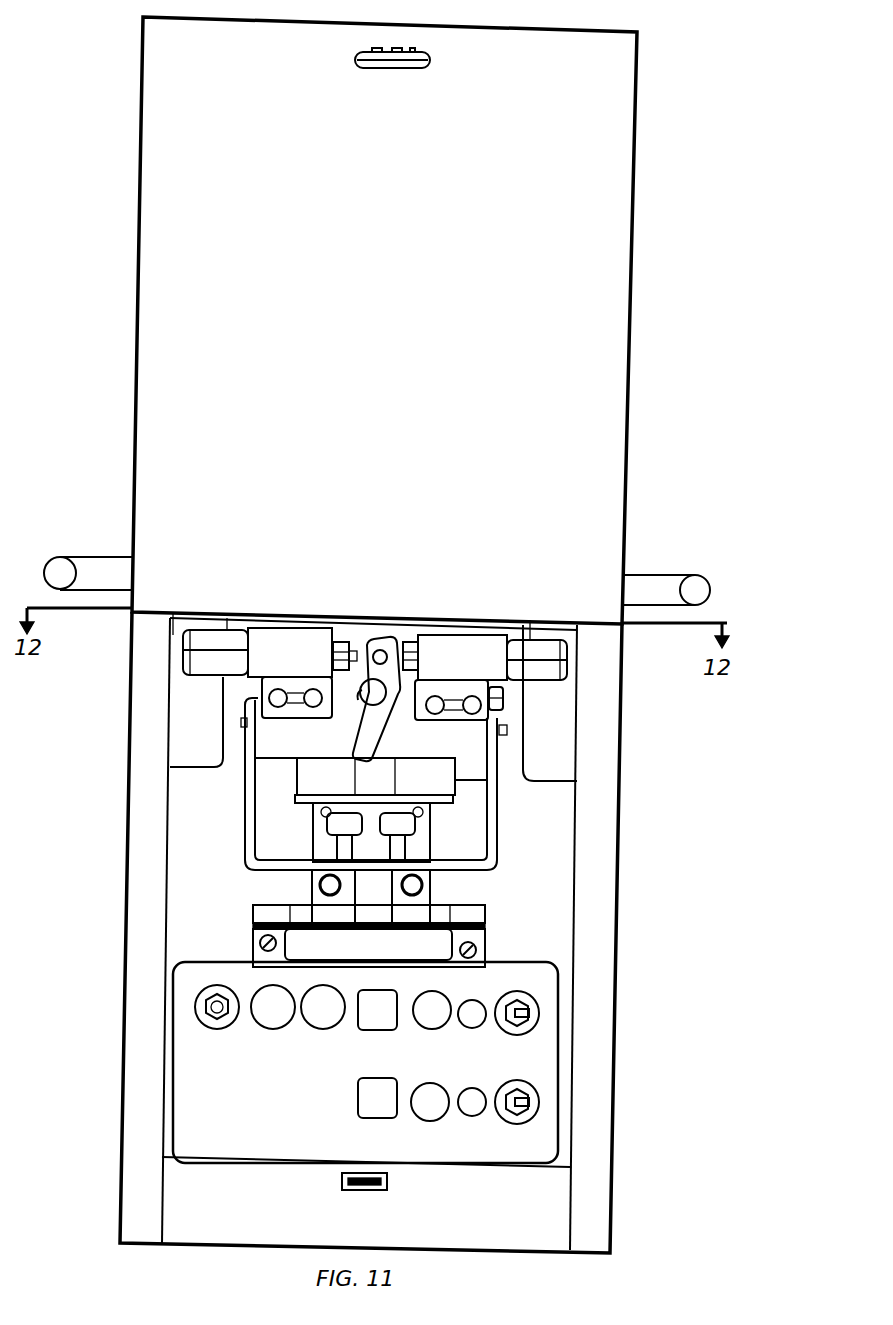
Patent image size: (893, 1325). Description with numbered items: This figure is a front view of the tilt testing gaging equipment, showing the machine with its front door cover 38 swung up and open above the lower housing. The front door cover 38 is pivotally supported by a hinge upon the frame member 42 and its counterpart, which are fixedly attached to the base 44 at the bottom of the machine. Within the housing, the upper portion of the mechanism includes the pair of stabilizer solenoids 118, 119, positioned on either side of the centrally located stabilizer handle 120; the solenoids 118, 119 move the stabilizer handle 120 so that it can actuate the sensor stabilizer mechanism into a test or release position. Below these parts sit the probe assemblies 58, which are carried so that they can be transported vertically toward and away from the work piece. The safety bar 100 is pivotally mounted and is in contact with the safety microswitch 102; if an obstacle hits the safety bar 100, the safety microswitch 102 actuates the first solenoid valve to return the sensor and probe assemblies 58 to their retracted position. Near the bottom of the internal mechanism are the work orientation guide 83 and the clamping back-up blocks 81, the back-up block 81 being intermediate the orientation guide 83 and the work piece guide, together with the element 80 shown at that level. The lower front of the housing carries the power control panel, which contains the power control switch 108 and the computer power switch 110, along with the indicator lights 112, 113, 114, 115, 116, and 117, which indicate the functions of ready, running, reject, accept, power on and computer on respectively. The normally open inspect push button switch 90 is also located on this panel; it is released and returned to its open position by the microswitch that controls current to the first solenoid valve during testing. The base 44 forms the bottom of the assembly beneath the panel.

The front door cover 38 is at (595, 318).
The frame member 42 is at (143, 672).
The base 44 is at (540, 1210).
The probe assemblies 58 is at (415, 830).
The base plate 80 is at (270, 952).
The clamping back-up blocks 81 is at (268, 915).
The work orientation guide 83 is at (362, 900).
The inspect push button switch 90 is at (210, 1005).
The safety bar 100 is at (503, 765).
The safety microswitch 102 is at (498, 693).
The power control switch 108 is at (520, 1012).
The computer power switch 110 is at (520, 1102).
The indicator light 112 is at (256, 1020).
The indicator light 113 is at (310, 1020).
The indicator light 114 is at (360, 1020).
The indicator light 115 is at (393, 1082).
The indicator light 116 is at (435, 1010).
The indicator light 117 is at (432, 1105).
The stabilizer solenoid 118 is at (268, 655).
The stabilizer solenoid 119 is at (545, 635).
The stabilizer handle 120 is at (388, 648).